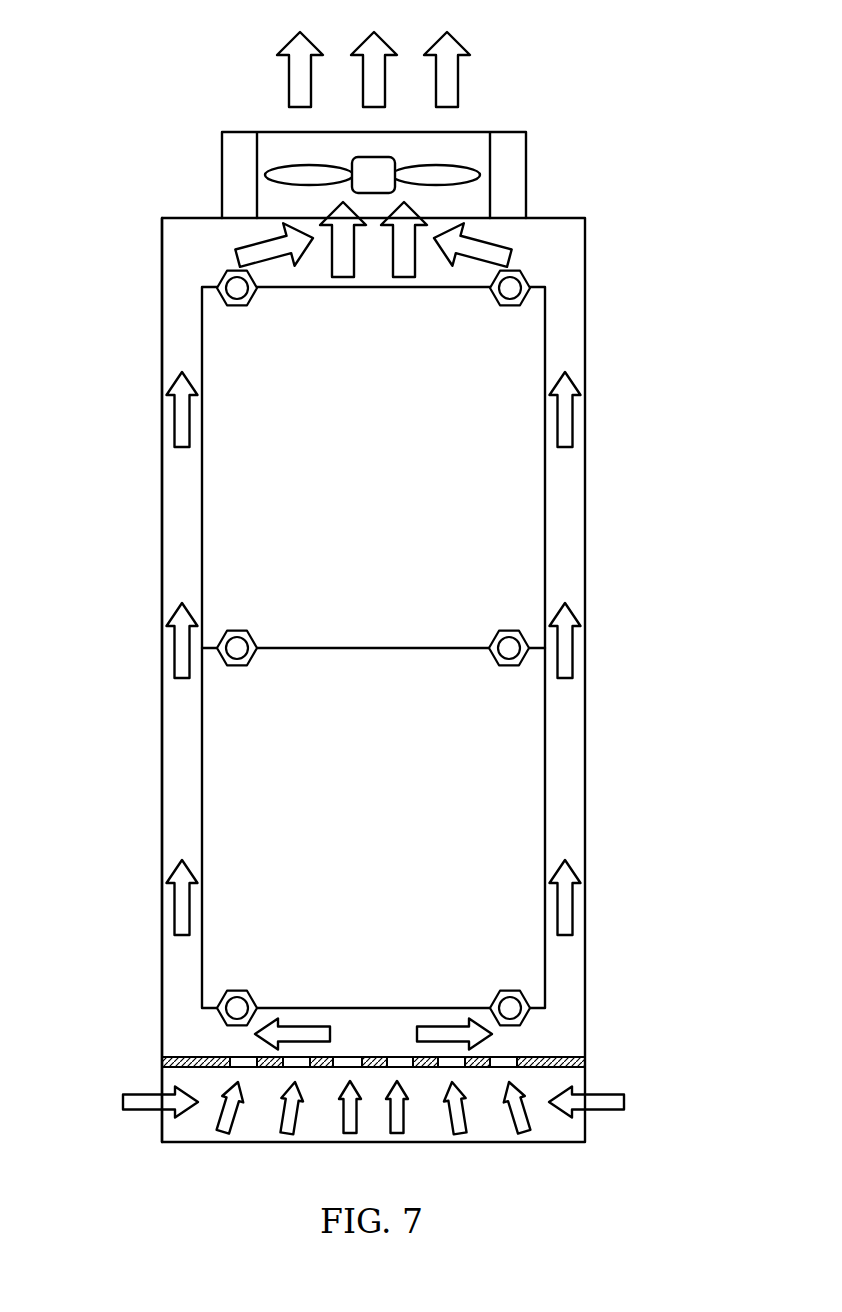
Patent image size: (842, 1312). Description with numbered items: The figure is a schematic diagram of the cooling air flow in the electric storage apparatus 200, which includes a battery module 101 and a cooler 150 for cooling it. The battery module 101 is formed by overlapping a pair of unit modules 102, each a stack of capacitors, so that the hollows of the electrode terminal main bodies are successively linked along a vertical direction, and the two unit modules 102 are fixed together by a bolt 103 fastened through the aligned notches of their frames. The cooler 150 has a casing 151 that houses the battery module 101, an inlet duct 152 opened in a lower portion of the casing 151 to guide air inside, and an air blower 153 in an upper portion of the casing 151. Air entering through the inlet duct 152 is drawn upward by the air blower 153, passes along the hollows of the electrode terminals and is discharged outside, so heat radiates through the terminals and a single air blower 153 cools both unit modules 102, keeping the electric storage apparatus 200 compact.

The electric storage apparatus 200 is at (529, 61).
The cooler 150 is at (213, 155).
The air blower 153 is at (467, 165).
The battery module 101 is at (593, 380).
The casing 151 is at (162, 475).
The unit module 102 is at (480, 513).
The bolt 103 is at (219, 649).
The inlet duct 152 is at (585, 1078).